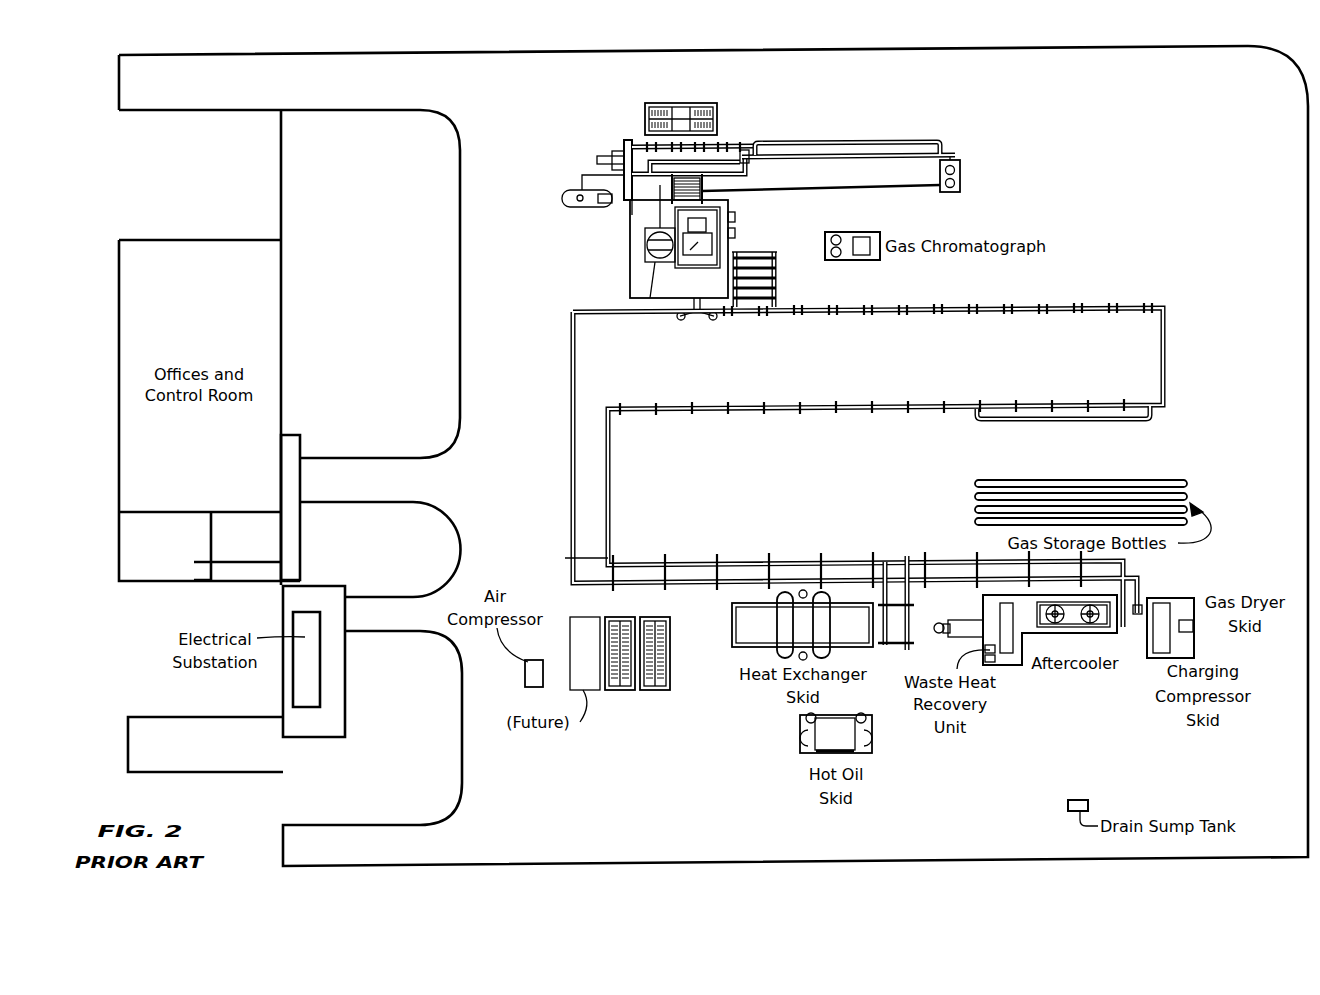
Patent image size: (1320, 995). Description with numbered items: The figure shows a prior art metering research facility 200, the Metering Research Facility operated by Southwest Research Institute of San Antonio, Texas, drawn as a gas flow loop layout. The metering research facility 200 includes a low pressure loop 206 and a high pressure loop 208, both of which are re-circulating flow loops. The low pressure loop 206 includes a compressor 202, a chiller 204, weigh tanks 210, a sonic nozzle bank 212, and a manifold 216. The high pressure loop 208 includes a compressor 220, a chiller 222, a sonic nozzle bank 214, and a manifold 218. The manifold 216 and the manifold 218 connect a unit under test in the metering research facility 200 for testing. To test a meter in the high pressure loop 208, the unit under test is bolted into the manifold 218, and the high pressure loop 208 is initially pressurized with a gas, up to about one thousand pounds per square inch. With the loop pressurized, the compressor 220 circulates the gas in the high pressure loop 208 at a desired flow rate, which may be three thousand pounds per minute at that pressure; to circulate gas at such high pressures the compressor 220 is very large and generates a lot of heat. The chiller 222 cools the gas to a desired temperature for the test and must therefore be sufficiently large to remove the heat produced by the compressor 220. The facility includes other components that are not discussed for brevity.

The metering research facility 200 is at (135, 164).
The compressor 202 is at (618, 150).
The chiller 204 is at (716, 102).
The low pressure loop 206 is at (815, 140).
The high pressure loop 208 is at (1097, 400).
The weigh tanks 210 is at (636, 268).
The sonic nozzle bank 212 is at (702, 190).
The sonic nozzle bank 214 is at (777, 275).
The manifold 216 is at (946, 152).
The manifold 218 is at (1076, 421).
The compressor 220 is at (1003, 612).
The chiller 222 is at (655, 690).